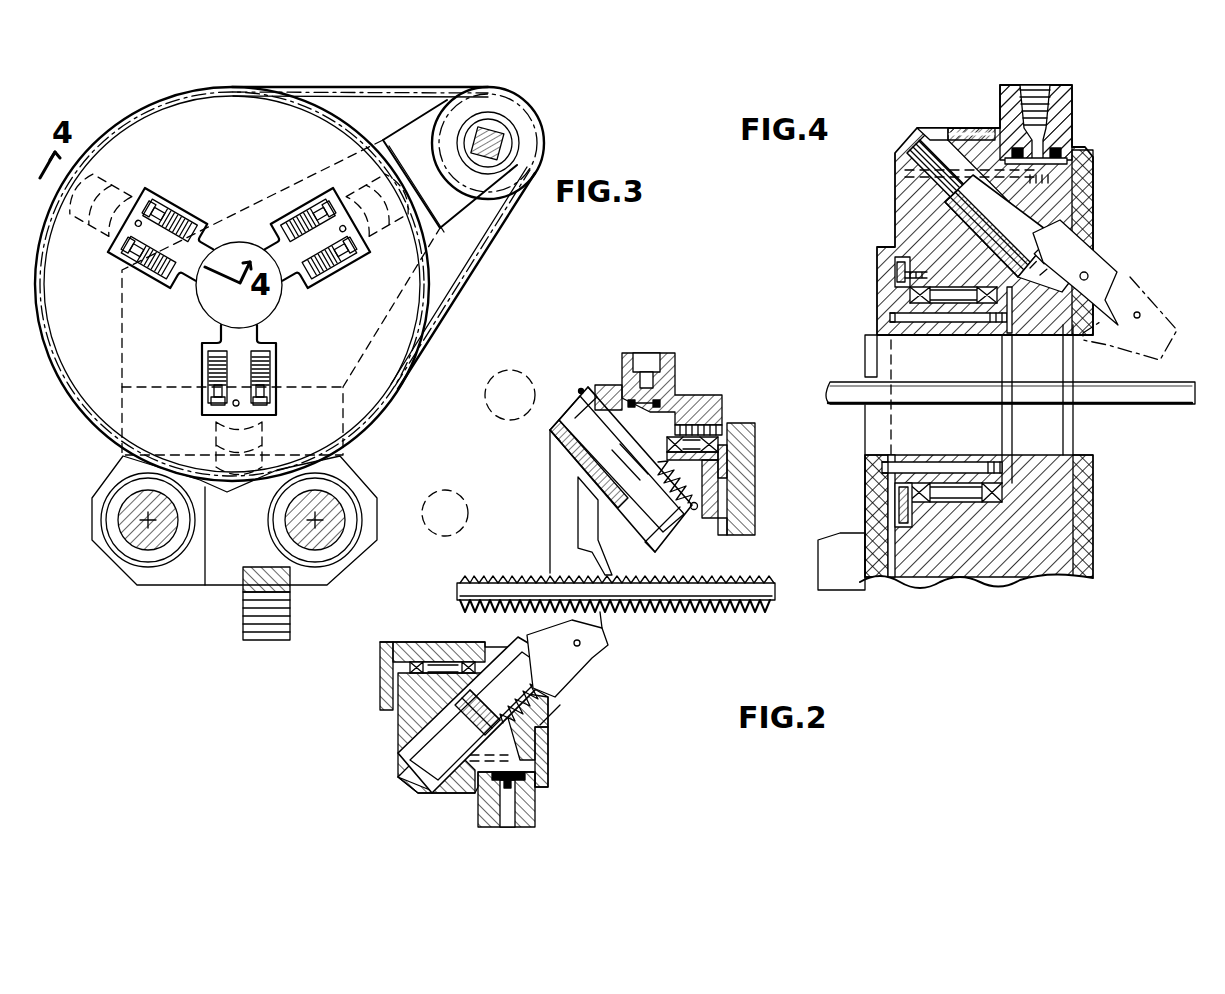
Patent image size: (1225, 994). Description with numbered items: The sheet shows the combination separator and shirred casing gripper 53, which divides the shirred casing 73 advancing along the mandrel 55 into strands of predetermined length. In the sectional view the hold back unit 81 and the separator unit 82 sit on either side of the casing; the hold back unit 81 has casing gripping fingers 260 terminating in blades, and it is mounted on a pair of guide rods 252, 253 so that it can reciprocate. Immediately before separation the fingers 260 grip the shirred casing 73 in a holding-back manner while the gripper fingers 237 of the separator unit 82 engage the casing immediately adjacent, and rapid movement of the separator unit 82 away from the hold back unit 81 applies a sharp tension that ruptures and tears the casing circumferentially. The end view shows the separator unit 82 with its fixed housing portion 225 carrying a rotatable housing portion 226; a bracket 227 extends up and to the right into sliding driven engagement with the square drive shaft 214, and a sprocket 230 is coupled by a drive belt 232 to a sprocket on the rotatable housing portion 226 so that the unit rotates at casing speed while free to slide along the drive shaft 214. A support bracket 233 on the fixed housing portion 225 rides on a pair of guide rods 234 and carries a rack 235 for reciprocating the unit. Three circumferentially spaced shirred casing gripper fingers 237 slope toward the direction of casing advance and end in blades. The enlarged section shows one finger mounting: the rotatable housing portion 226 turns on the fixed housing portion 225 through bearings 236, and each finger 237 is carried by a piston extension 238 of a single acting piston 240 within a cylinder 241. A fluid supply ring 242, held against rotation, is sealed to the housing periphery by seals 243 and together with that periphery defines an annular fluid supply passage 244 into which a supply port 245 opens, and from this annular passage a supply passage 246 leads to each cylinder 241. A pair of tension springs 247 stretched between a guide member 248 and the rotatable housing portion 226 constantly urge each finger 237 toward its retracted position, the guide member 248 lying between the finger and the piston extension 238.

In FIG. 2, the combination separator and shirred casing gripper 53 is at (578, 373).
In FIG. 2, the mandrel 55 is at (452, 596).
In FIG. 4, the mandrel 55 is at (838, 385).
In FIG. 2, the shirred casing 73 is at (735, 614).
In FIG. 2, the hold back unit 81 is at (701, 380).
In FIG. 3, the separator unit 82 is at (481, 81).
In FIG. 2, the separator unit 82 is at (559, 802).
In FIG. 4, the separator unit 82 is at (1128, 122).
In FIG. 3, the drive shaft 214 is at (505, 147).
In FIG. 4, the fixed housing portion 225 is at (885, 305).
In FIG. 4, the rotatable housing portion 226 is at (895, 215).
In FIG. 3, the bracket 227 is at (455, 205).
In FIG. 4, the sprocket 230 is at (955, 125).
In FIG. 4, the drive belt 232 is at (975, 125).
In FIG. 3, the support bracket 233 is at (350, 470).
In FIG. 4, the support bracket 233 is at (838, 540).
In FIG. 3, the guide rods 234 is at (328, 505).
In FIG. 3, the rack 235 is at (243, 605).
In FIG. 4, the bearings 236 is at (925, 510).
In FIG. 3, the shirred casing gripper fingers 237 is at (212, 333).
In FIG. 2, the shirred casing gripper fingers 237 is at (603, 623).
In FIG. 4, the shirred casing gripper fingers 237 is at (1125, 290).
In FIG. 4, the piston extension 238 is at (935, 265).
In FIG. 4, the piston 240 is at (905, 185).
In FIG. 4, the cylinder 241 is at (920, 228).
In FIG. 4, the fluid supply ring 242 is at (1062, 103).
In FIG. 4, the seals 243 is at (1075, 140).
In FIG. 4, the seal ring 244 is at (1070, 163).
In FIG. 4, the supply port 245 is at (1040, 130).
In FIG. 4, the supply passage 246 is at (1085, 190).
In FIG. 3, the tension springs 247 is at (300, 205).
In FIG. 4, the guide member 248 is at (1075, 235).
In FIG. 3, the guide rods 252 is at (488, 400).
In FIG. 3, the guide rods 253 is at (450, 492).
In FIG. 2, the casing gripping finger 260 is at (600, 553).